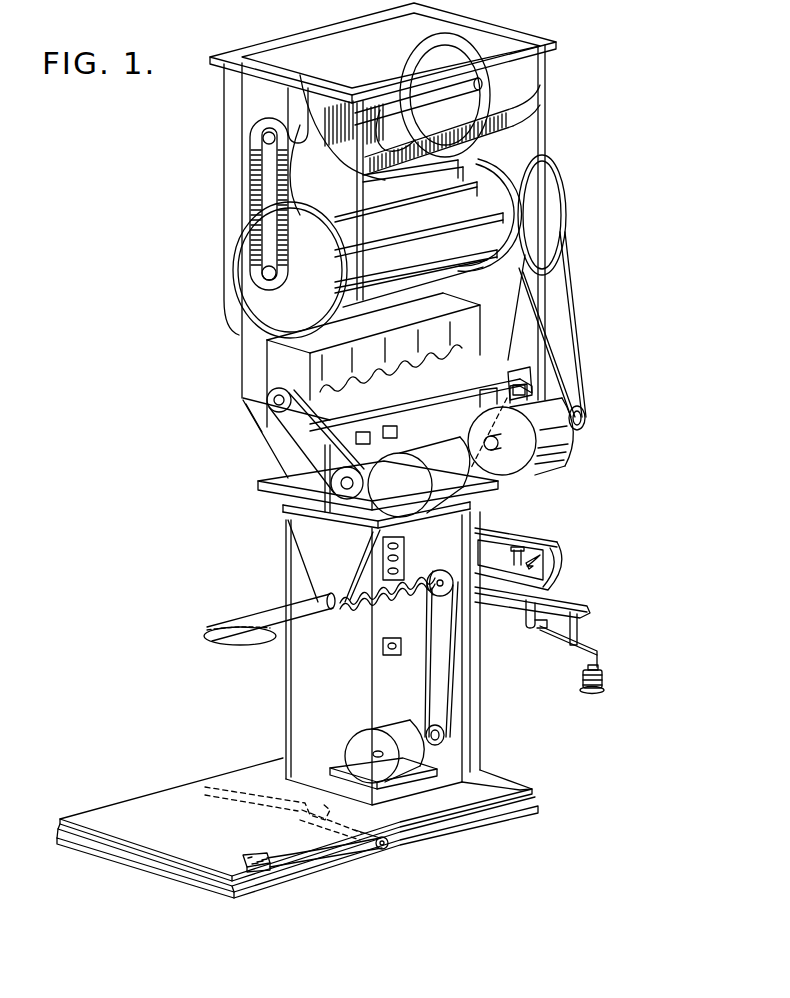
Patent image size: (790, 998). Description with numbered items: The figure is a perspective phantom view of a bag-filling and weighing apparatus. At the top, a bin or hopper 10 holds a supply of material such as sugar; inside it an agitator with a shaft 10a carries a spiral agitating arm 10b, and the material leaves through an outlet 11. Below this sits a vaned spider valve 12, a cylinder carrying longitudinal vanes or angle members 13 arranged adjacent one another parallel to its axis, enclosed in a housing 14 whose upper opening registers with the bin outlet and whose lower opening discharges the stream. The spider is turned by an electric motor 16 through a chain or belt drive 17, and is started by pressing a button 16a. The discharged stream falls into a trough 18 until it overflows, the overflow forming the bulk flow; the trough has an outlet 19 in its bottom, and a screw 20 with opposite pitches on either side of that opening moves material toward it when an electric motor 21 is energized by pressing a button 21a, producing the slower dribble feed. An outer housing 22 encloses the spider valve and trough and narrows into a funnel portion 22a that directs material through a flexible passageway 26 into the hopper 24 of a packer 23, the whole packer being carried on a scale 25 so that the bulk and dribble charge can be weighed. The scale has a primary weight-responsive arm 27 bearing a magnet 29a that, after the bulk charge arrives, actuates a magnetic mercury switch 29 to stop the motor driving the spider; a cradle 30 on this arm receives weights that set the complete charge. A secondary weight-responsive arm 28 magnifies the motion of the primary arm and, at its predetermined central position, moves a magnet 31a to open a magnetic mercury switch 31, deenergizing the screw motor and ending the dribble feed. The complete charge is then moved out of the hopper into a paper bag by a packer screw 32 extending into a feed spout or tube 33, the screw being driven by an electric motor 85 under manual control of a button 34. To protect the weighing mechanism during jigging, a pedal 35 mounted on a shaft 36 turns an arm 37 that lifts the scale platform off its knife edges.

The bin or hopper 10 is at (513, 90).
The shaft 10a is at (487, 113).
The spiral agitating arm 10b is at (487, 77).
The outlet 11 is at (270, 185).
The vaned spider valve 12 is at (492, 230).
The vanes or angle members 13 is at (478, 200).
The housing 14 is at (232, 238).
The electric motor 16 is at (567, 452).
The button 16a is at (393, 555).
The chain or belt drive 17 is at (572, 303).
The trough 18 is at (277, 357).
The outlet 19 is at (520, 375).
The screw 20 is at (260, 377).
The electric motor 21 is at (370, 453).
The button 21a is at (390, 567).
The outer housing 22 is at (240, 400).
The funnel portion 22a is at (263, 428).
The packer 23 is at (283, 577).
The hopper 24 is at (318, 590).
The scale 25 is at (477, 822).
The flexible passageway 26 is at (507, 497).
The primary weight-responsive arm 27 is at (583, 645).
The secondary weight-responsive arm 28 is at (540, 558).
The magnetic mercury switch 29 is at (533, 615).
The magnet 29a is at (542, 630).
The cradle 30 is at (590, 694).
The magnetic mercury switch 31 is at (532, 547).
The magnet 31a is at (508, 547).
The packer screw 32 is at (388, 603).
The feed spout or tube 33 is at (270, 636).
The button 34 is at (395, 650).
The pedal 35 is at (267, 868).
The shaft 36 is at (383, 849).
The arm 37 is at (325, 814).
The electric motor 85 is at (348, 750).